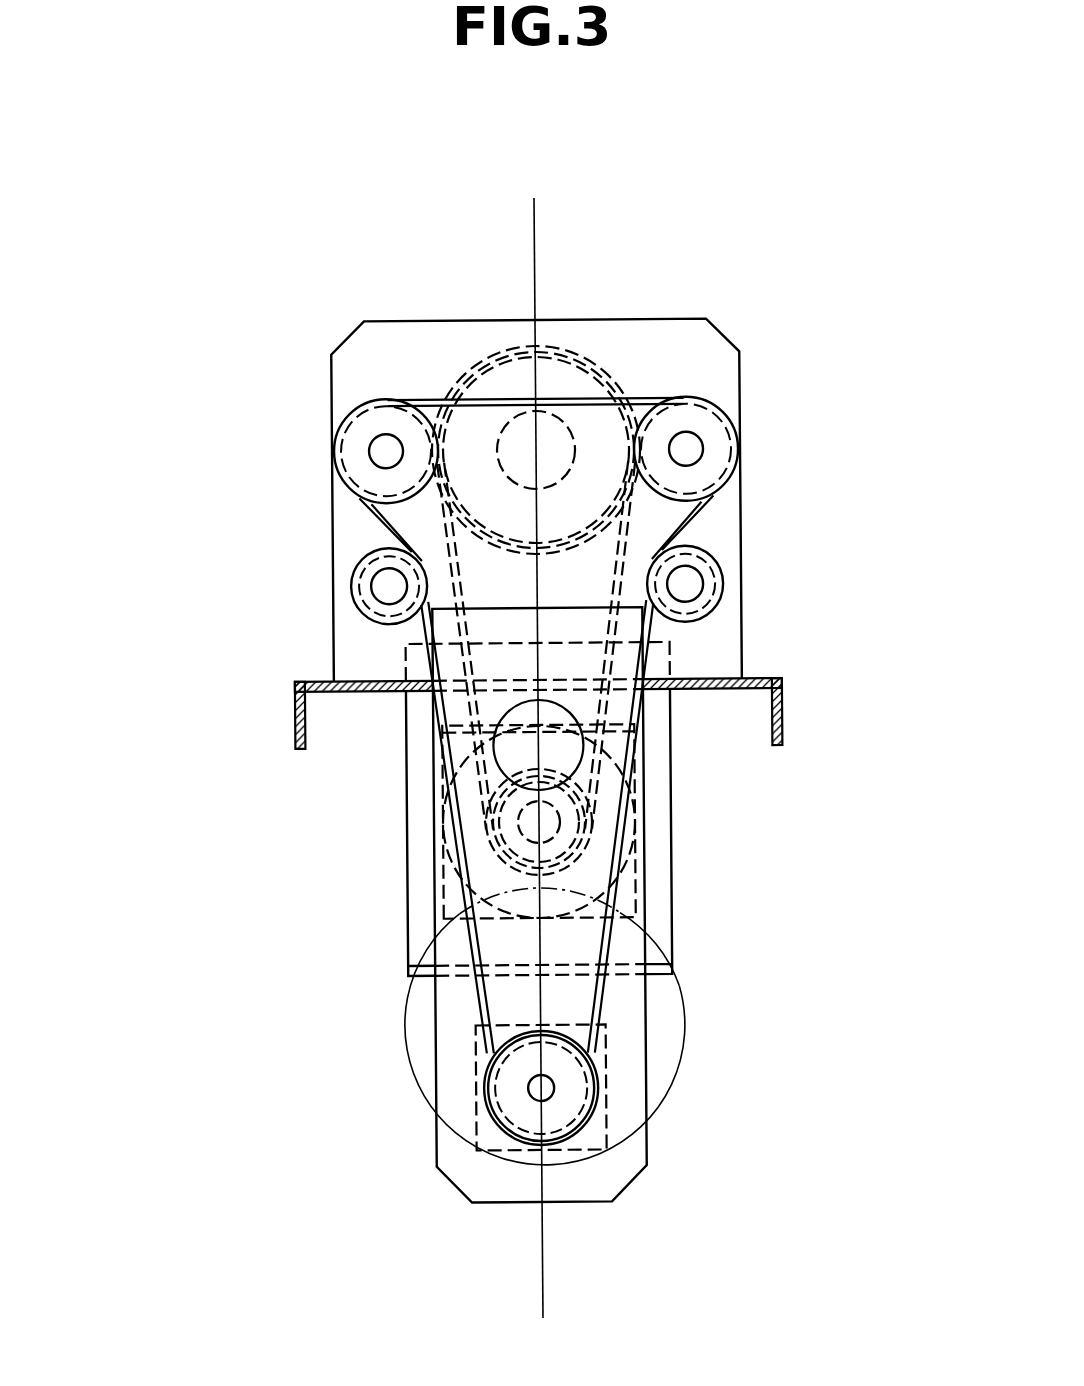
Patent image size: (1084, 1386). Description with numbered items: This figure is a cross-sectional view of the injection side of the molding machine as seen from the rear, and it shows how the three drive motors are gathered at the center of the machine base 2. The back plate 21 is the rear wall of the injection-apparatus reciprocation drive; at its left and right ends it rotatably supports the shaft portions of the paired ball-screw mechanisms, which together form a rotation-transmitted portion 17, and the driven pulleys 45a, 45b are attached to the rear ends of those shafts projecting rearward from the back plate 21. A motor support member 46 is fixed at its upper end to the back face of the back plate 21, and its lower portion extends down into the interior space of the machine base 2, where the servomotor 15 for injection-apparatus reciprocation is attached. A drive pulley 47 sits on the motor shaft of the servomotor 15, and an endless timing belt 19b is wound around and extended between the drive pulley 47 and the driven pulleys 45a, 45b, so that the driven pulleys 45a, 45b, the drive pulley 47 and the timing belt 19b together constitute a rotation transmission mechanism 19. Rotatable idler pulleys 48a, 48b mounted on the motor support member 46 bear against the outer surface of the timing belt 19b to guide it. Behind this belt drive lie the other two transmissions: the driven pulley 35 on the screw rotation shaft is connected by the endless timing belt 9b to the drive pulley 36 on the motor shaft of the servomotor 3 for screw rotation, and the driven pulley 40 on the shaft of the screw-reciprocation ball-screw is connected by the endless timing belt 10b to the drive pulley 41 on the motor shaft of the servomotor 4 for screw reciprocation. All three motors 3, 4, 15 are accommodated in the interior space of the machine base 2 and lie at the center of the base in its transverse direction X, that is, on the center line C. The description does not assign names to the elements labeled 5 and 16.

The machine base 2 is at (782, 712).
The servomotor for screw rotation 3 is at (668, 947).
The servomotor for screw reciprocation 4 is at (645, 891).
The guide shaft 5 is at (683, 1018).
The endless timing belt 9b is at (603, 578).
The endless timing belt 10b is at (612, 704).
The servomotor for injection apparatus reciprocation 15 is at (492, 1127).
The intermediate pulley 16 is at (498, 779).
The rotation-transmitted portion 17 is at (374, 447).
The rotation transmission mechanism 19 is at (364, 622).
The endless timing belt 19b is at (608, 1000).
The back plate 21 is at (740, 377).
The driven pulley 35 is at (452, 392).
The drive pulley 36 is at (493, 858).
The driven pulley 40 is at (463, 364).
The drive pulley 41 is at (493, 842).
The driven pulley 45a is at (333, 471).
The driven pulley 45b is at (733, 486).
The motor support member 46 is at (646, 1150).
The drive pulley 47 is at (610, 1103).
The idler pulley 48a is at (349, 589).
The idler pulley 48b is at (720, 585).
The center line C is at (534, 226).
The transverse direction X is at (790, 1253).